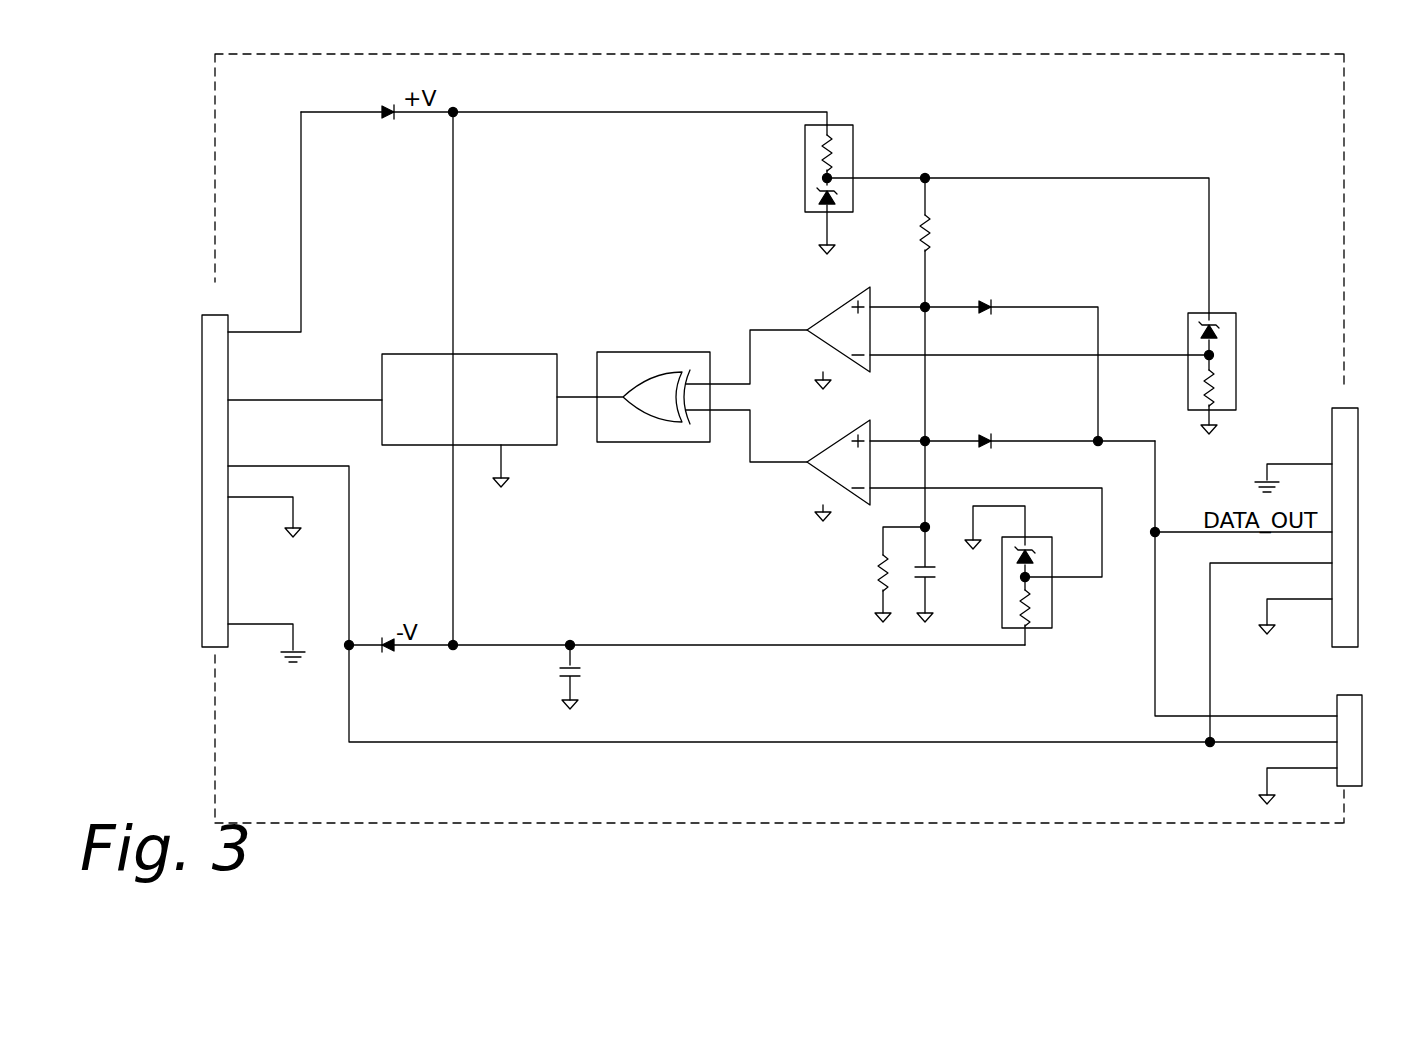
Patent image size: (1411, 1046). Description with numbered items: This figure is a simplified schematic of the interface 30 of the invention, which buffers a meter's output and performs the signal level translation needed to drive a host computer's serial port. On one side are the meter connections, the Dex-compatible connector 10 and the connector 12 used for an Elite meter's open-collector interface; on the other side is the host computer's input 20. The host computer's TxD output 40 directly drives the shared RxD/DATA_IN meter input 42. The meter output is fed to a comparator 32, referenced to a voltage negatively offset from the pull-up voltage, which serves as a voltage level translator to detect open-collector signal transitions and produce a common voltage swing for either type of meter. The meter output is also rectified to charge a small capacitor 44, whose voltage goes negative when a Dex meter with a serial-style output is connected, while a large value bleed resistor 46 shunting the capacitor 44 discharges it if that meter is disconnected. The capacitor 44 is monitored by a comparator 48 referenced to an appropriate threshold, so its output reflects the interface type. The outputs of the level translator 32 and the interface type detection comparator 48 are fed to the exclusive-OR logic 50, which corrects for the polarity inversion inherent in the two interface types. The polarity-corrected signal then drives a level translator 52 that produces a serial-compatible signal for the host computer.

The connector 10 is at (1355, 752).
The connector 12 is at (1360, 492).
The host computer's input 20 is at (220, 633).
The interface 30 is at (754, 838).
The comparator 32 is at (847, 305).
The TxD output 40 is at (322, 465).
The RxD/DATA_IN meter input 42 is at (1208, 745).
The capacitor 44 is at (935, 571).
The bleed resistor 46 is at (880, 573).
The comparator 48 is at (823, 463).
The exclusive-OR logic 50 is at (700, 352).
The level translator 52 is at (515, 353).